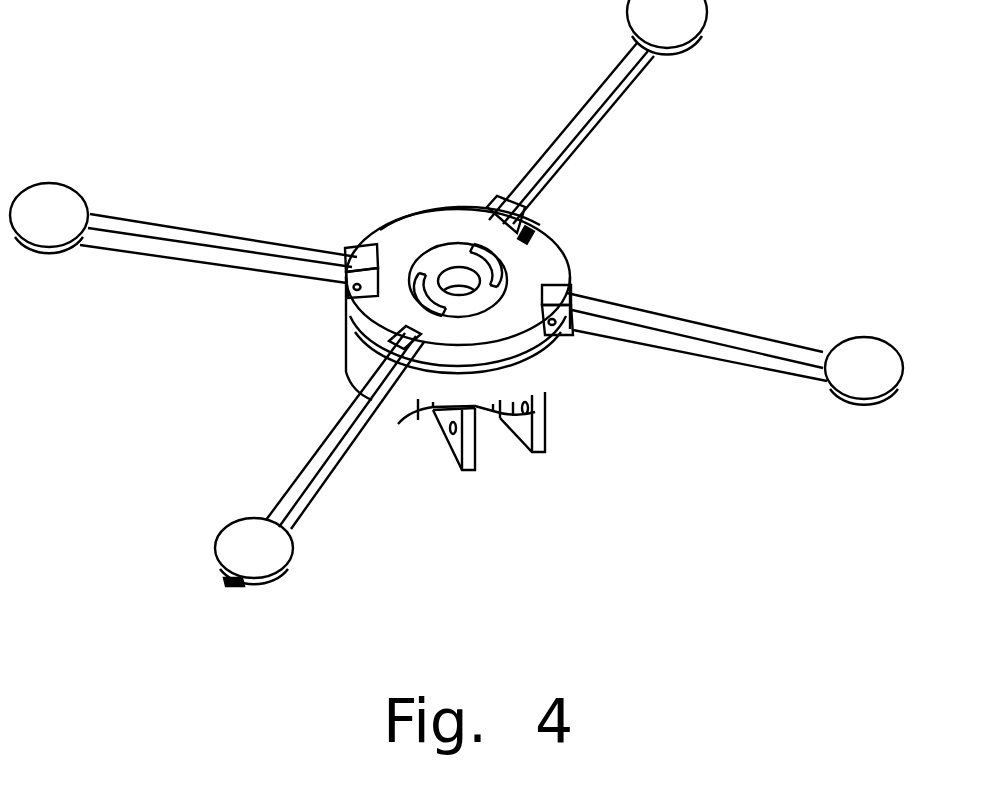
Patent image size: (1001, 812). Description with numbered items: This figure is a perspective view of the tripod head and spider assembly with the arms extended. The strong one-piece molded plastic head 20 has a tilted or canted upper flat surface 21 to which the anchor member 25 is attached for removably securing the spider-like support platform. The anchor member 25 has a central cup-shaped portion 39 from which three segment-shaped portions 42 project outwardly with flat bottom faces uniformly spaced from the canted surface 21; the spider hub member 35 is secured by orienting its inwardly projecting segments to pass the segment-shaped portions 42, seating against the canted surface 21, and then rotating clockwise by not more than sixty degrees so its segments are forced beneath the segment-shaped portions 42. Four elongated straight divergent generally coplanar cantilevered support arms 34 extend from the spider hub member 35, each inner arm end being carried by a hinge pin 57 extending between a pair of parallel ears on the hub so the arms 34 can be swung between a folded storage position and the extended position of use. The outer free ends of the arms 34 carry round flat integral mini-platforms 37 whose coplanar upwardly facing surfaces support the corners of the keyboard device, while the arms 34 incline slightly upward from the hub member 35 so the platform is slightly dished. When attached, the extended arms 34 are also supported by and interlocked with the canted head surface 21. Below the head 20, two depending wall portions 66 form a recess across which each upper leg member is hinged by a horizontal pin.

The head 20 is at (333, 383).
The canted upper flat surface 21 is at (527, 352).
The anchor member 25 is at (420, 243).
The support arms 34 is at (590, 138).
The spider hub member 35 is at (462, 232).
The mini-platforms 37 is at (680, 22).
The cup-shaped portion 39 is at (440, 268).
The segment-shaped portions 42 is at (495, 285).
The hinge pin 57 is at (533, 238).
The depending wall portions 66 is at (520, 430).